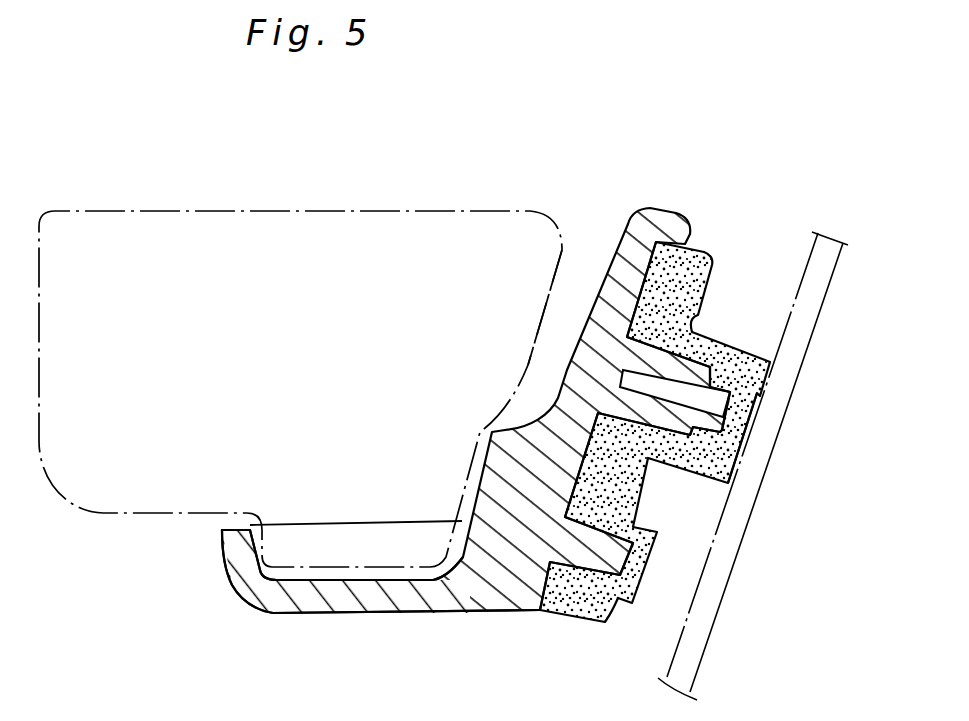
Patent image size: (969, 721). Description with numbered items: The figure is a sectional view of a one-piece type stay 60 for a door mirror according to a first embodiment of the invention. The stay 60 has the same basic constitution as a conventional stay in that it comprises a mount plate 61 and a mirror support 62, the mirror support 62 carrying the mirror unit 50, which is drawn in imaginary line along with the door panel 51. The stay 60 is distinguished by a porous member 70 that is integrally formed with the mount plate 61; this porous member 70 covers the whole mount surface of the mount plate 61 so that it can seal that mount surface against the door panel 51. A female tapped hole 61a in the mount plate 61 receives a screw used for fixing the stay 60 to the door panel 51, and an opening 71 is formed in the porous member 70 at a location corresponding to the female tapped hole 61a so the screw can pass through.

The mirror unit 50 is at (305, 210).
The door panel 51 is at (798, 333).
The stay 60 is at (546, 299).
The mount plate 61 is at (636, 237).
The female tapped hole 61a is at (623, 373).
The mirror support 62 is at (365, 595).
The porous member 70 is at (690, 291).
The opening 71 is at (752, 418).